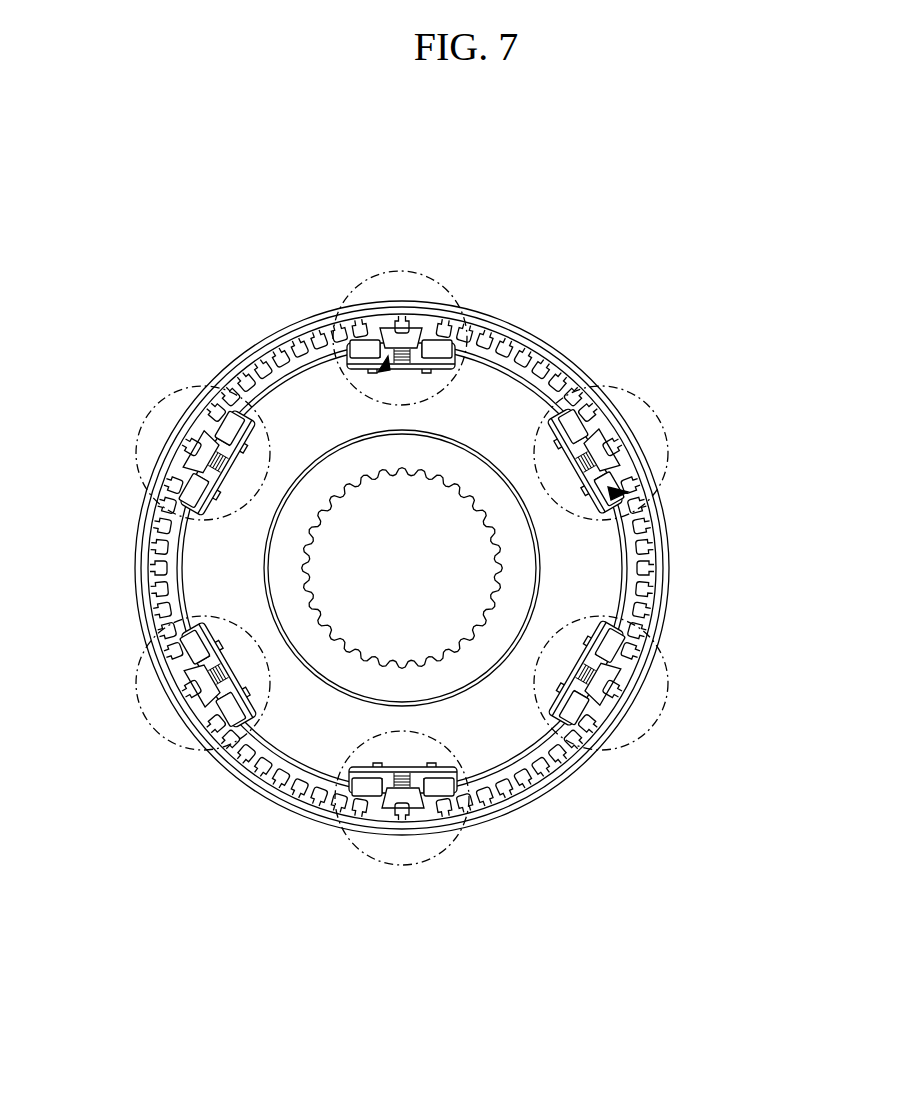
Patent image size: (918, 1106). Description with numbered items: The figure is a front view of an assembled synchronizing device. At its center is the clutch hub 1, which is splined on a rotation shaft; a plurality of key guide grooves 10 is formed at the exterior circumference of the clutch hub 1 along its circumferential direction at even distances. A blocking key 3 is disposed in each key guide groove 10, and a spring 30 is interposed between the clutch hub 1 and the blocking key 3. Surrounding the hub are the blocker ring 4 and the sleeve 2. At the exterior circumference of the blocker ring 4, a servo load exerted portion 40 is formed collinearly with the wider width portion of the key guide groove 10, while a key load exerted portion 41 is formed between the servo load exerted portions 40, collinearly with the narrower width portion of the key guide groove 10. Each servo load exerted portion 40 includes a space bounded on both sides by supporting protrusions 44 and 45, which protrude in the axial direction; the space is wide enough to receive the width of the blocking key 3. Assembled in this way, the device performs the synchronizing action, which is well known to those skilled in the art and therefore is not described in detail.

The clutch hub 1 is at (593, 542).
The sleeve 2 is at (520, 340).
The blocking key 3 is at (418, 335).
The blocker ring 4 is at (562, 388).
The key guide groove 10 is at (346, 370).
The spring 30 is at (440, 335).
The servo load exerted portion 40 is at (401, 271).
The key load exerted portion 41 is at (146, 420).
The supporting protrusion 44 is at (362, 343).
The supporting protrusion 45 is at (450, 342).